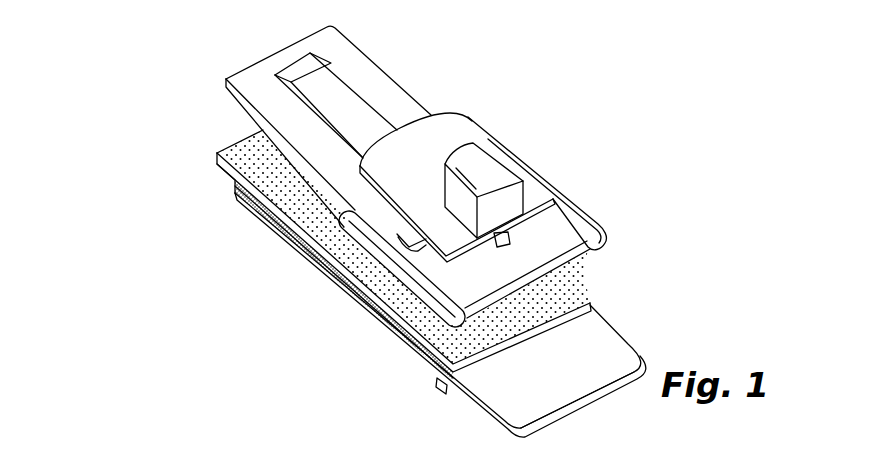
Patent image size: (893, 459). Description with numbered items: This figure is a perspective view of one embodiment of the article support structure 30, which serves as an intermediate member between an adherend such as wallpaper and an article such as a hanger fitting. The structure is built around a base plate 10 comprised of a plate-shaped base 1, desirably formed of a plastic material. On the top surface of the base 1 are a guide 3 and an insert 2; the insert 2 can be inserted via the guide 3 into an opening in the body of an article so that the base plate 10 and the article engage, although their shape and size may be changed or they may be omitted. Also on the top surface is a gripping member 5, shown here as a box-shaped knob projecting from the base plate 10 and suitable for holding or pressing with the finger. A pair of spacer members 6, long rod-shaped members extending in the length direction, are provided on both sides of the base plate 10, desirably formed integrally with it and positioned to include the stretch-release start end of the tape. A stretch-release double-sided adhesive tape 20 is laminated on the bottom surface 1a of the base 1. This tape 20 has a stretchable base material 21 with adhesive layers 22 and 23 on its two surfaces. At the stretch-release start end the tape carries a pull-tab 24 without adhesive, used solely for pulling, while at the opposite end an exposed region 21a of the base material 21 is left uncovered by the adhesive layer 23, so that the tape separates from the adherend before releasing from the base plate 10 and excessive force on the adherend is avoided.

The base 1 is at (408, 107).
The bottom surface of base 1a is at (253, 108).
The insert 2 is at (457, 143).
The guide 3 is at (343, 105).
The gripping member 5 is at (523, 163).
The spacer members 6 is at (604, 235).
The base plate 10 is at (558, 150).
The double-sided adhesive tape 20 is at (644, 303).
The base material 21 is at (432, 330).
The exposed region of the base 21a is at (225, 177).
The adhesive layer 22 is at (557, 270).
The adhesive layer 23 is at (442, 380).
The pull-tab 24 is at (557, 395).
The article support structure 30 is at (193, 66).